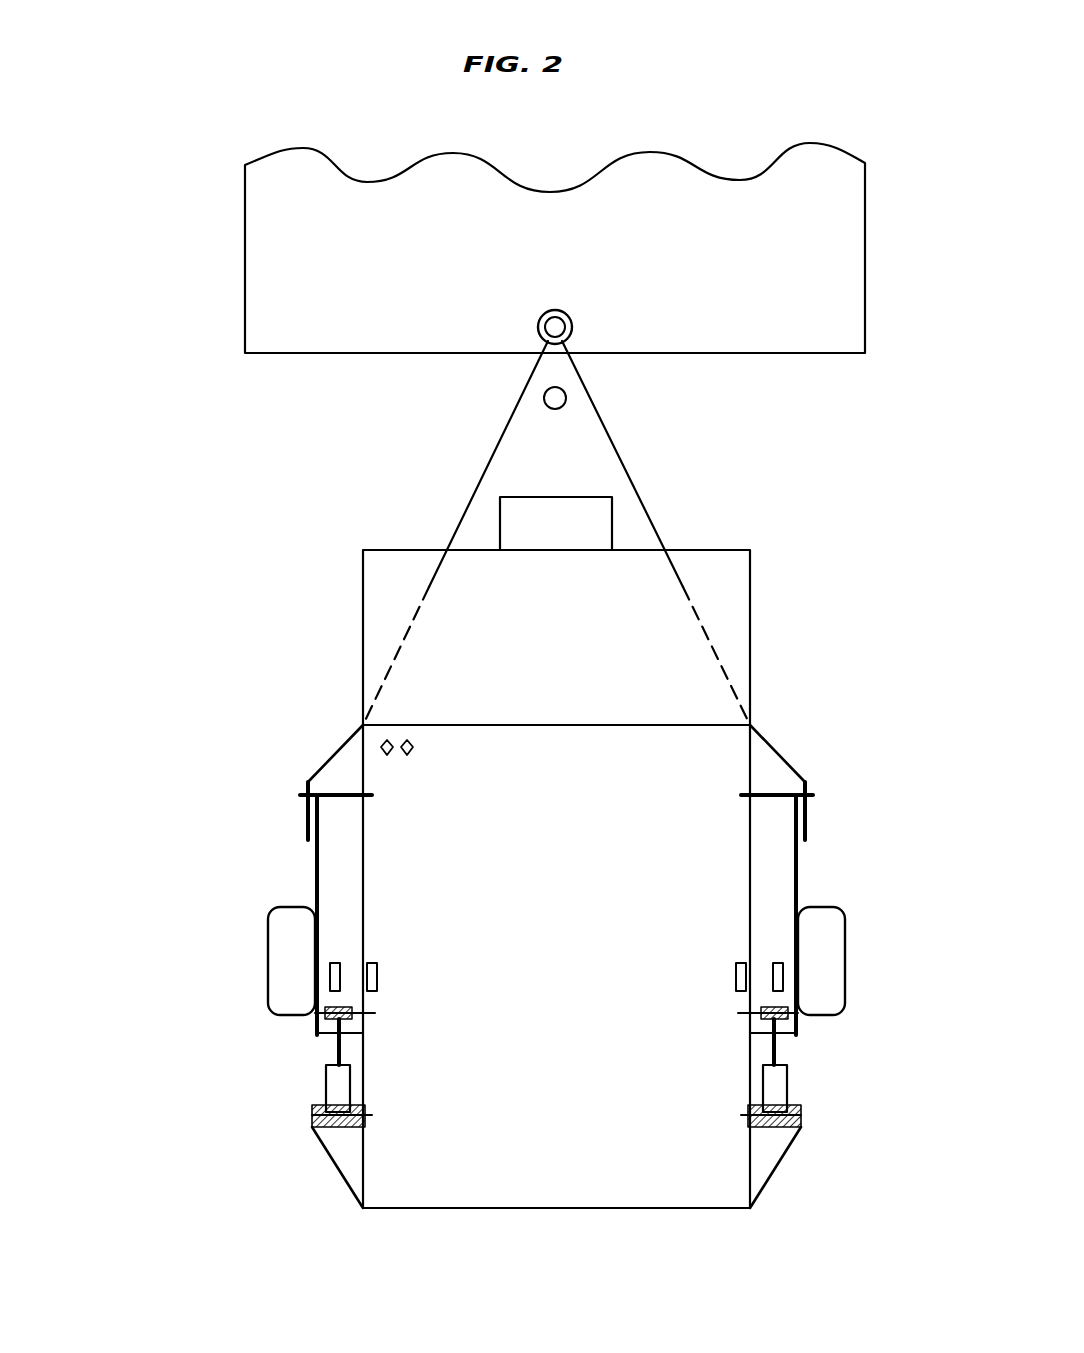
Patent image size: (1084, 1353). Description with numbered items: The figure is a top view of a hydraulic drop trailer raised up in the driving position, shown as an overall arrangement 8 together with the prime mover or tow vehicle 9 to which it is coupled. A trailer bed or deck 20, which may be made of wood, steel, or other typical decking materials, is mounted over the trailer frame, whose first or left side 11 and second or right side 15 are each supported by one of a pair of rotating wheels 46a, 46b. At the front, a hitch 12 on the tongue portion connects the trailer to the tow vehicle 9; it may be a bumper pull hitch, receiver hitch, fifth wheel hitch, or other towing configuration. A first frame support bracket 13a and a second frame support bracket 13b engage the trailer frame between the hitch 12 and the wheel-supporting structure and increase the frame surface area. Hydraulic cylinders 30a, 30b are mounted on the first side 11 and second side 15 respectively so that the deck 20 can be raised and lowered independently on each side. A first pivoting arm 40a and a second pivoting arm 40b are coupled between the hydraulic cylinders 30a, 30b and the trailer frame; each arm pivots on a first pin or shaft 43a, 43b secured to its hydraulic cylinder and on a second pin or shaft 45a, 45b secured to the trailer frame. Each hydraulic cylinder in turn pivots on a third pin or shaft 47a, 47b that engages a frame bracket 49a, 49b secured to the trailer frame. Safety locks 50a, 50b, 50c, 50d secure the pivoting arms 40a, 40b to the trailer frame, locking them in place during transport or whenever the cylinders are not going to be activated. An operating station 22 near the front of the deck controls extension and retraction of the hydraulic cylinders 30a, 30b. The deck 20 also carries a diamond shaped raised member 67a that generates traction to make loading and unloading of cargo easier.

The trailer system 8 is at (108, 138).
The prime mover (tow vehicle) 9 is at (242, 246).
The first side 11 is at (228, 925).
The hitch 12 is at (540, 342).
The first frame support bracket 13a is at (336, 750).
The second frame support bracket 13b is at (778, 750).
The second side 15 is at (885, 920).
The trailer bed or deck 20 is at (552, 1210).
The operating station 22 is at (612, 522).
The hydraulic cylinder 30a is at (326, 1086).
The hydraulic cylinder 30b is at (790, 1094).
The first pivoting arm 40a is at (312, 885).
The second pivoting arm 40b is at (800, 884).
The first pin or shaft 43a is at (322, 1037).
The first pin or shaft 43b is at (791, 1024).
The second pin or shaft 45a is at (300, 795).
The second pin or shaft 45b is at (813, 795).
The rotating wheel 46a is at (268, 1000).
The rotating wheel 46b is at (845, 996).
The third pin or shaft 47a is at (312, 1118).
The third pin or shaft 47b is at (801, 1120).
The frame bracket 49a is at (340, 1180).
The frame bracket 49b is at (770, 1176).
The safety lock 50a is at (338, 962).
The safety lock 50b is at (378, 978).
The safety lock 50c is at (736, 978).
The safety lock 50d is at (776, 960).
The diamond shaped raised member 67a is at (388, 757).